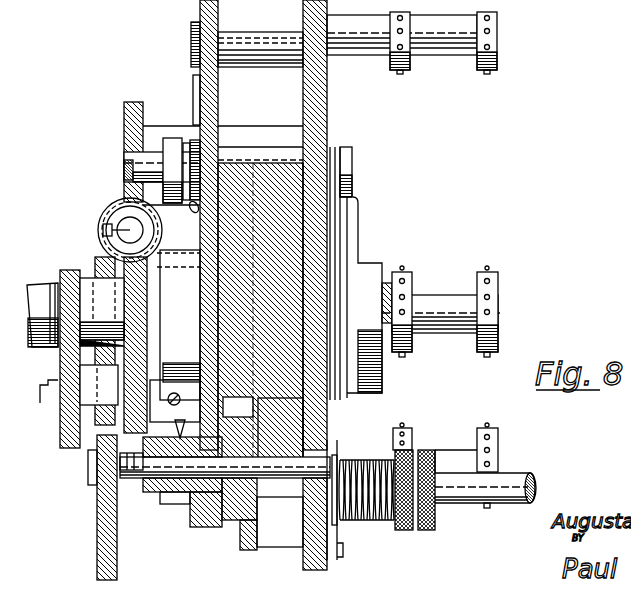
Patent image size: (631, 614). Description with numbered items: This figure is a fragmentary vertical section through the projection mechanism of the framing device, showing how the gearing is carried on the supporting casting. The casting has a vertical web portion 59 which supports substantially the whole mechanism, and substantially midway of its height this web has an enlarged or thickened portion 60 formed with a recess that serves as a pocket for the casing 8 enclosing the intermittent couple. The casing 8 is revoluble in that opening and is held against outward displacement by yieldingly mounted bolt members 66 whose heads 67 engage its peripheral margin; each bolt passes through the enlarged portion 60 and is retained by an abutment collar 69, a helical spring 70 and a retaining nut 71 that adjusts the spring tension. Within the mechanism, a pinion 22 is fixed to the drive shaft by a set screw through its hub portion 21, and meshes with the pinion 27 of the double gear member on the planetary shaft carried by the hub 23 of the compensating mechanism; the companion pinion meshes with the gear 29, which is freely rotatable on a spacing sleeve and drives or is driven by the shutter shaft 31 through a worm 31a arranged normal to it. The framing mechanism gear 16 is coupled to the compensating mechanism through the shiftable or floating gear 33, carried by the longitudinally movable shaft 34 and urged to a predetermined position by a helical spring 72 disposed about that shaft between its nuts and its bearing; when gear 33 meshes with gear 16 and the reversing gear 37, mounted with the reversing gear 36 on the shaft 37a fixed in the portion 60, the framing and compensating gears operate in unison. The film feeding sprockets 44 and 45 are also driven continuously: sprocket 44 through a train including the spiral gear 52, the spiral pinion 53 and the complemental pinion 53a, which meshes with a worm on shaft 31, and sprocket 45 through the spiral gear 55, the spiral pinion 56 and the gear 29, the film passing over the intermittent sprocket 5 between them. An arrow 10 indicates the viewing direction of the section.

The intermittent sprocket 5 is at (440, 298).
The casing 8 is at (356, 229).
The direction arrow 10 is at (190, 228).
The framing mechanism gear 16 is at (250, 395).
The hub portion 21 is at (222, 286).
The pinion 22 is at (62, 272).
The hub 23 is at (162, 386).
The pinion 27 is at (60, 431).
The gear 29 is at (143, 300).
The shaft 31 is at (128, 230).
The worm 31a is at (120, 206).
The shiftable or floating gear 33 is at (257, 545).
The longitudinally movable shaft 34 is at (455, 504).
The reversing gear 36 is at (171, 495).
The reversing gear 37 is at (232, 518).
The shaft 37a is at (167, 497).
The film feeding sprocket 44 is at (497, 56).
The film feeding sprocket 45 is at (487, 430).
The spiral gear 52 is at (215, 84).
The spiral pinion 53 is at (215, 98).
The complemental pinion 53a is at (137, 102).
The spiral gear 55 is at (97, 518).
The spiral pinion 56 is at (96, 262).
The web portion 59 is at (327, 80).
The enlarged or thickened portion 60 is at (287, 212).
The bolt member 66 is at (124, 168).
The head 67 is at (348, 158).
The abutment collar 69 is at (190, 206).
The helical spring 70 is at (192, 168).
The retaining nut 71 is at (170, 140).
The helical spring 72 is at (357, 457).